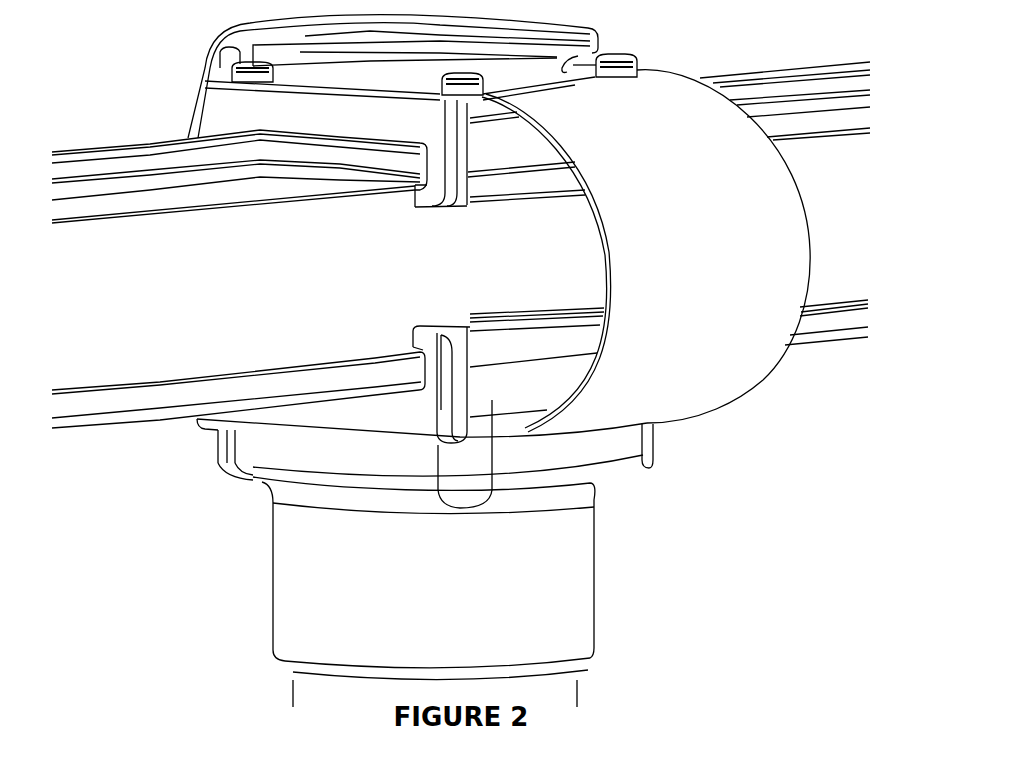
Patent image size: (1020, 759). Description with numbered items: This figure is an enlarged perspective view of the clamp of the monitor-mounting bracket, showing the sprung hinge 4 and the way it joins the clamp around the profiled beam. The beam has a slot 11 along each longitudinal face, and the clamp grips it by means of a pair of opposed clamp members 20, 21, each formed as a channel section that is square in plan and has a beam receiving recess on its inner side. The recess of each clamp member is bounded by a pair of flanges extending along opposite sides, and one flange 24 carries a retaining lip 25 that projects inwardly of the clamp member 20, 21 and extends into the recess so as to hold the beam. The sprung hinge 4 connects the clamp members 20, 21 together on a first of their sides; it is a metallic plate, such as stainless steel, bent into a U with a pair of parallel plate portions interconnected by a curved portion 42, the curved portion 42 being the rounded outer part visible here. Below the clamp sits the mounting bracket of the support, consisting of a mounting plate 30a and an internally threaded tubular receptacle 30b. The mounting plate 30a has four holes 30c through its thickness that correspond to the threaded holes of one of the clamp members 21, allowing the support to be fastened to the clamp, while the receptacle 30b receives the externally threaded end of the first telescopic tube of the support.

The sprung hinge 4 is at (818, 180).
The slot 11 is at (152, 311).
The clamp member 20 is at (233, 111).
The clamp member 21 is at (310, 413).
The flange 24 is at (437, 183).
The retaining lip 25 is at (417, 193).
The mounting plate 30a is at (383, 467).
The tubular receptacle 30b is at (412, 620).
The hole 30c is at (463, 500).
The curved portion 42 is at (680, 255).